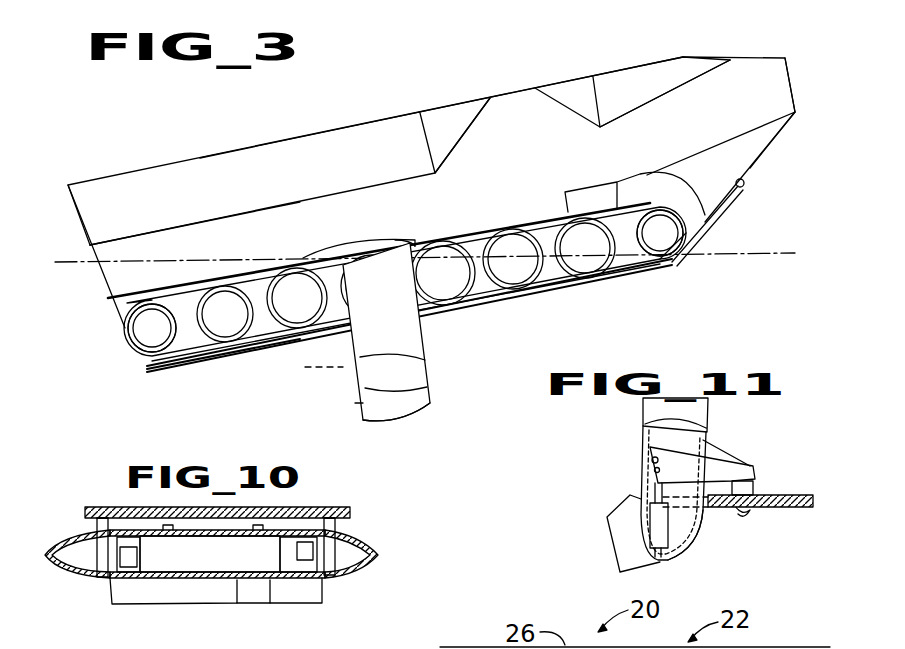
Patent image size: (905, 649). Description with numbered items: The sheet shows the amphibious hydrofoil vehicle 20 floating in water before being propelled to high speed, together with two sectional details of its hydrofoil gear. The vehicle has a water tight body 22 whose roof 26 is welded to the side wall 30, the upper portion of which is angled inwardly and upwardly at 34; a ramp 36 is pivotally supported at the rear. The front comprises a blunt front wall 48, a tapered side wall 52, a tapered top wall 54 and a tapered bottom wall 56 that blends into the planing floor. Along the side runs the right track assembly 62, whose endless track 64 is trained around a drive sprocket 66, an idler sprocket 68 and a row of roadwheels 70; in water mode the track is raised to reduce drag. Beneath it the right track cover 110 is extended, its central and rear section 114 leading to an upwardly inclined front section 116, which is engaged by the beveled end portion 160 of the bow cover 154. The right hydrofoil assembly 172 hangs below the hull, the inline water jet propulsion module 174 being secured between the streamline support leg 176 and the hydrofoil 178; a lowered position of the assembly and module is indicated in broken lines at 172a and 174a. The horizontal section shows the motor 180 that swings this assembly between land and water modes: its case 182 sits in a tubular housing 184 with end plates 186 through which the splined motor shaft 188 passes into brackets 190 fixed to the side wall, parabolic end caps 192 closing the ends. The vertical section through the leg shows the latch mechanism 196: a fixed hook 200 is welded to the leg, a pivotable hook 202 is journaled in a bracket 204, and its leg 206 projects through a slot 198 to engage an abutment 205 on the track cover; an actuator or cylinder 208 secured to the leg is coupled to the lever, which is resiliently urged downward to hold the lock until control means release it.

In FIG. 3, the amphibious hydrofoil vehicle 20 is at (408, 78).
In FIG. 3, the water tight body 22 is at (555, 80).
In FIG. 3, the roof 26 is at (296, 136).
In FIG. 3, the side wall 30 is at (522, 152).
In FIG. 10, the side wall 30 is at (325, 507).
In FIG. 3, the angled upper portion of side wall 34 is at (265, 186).
In FIG. 3, the ramp 36 is at (66, 187).
In FIG. 3, the blunt front wall 48 is at (794, 68).
In FIG. 3, the tapered side wall 52 is at (737, 112).
In FIG. 3, the tapered top wall 54 is at (727, 60).
In FIG. 3, the tapered bottom wall 56 is at (788, 125).
In FIG. 3, the right track assembly 62 is at (147, 365).
In FIG. 3, the endless track 64 is at (616, 182).
In FIG. 3, the drive sprocket 66 is at (700, 232).
In FIG. 3, the idler sprocket 68 is at (132, 334).
In FIG. 3, the roadwheels 70 is at (282, 270).
In FIG. 3, the right track cover 110 is at (545, 306).
In FIG. 11, the right track cover 110 is at (772, 496).
In FIG. 3, the central and rear section 114 is at (437, 310).
In FIG. 3, the front section 116 is at (636, 272).
In FIG. 3, the bow cover 154 is at (733, 207).
In FIG. 3, the beveled end portion 160 is at (680, 258).
In FIG. 3, the right hydrofoil assembly 172 is at (433, 362).
In FIG. 11, the right hydrofoil assembly 172 is at (640, 412).
In FIG. 3, the leg lowered position 172a is at (285, 372).
In FIG. 3, the inline water jet propulsion module 174 is at (412, 385).
In FIG. 3, the foot lowered position 174a is at (296, 403).
In FIG. 3, the streamline support leg 176 is at (405, 333).
In FIG. 10, the streamline support leg 176 is at (208, 603).
In FIG. 11, the streamline support leg 176 is at (645, 426).
In FIG. 3, the hydrofoil 178 is at (432, 396).
In FIG. 3, the motor 180 is at (376, 240).
In FIG. 10, the motor 180 is at (238, 560).
In FIG. 10, the case 182 is at (272, 603).
In FIG. 10, the tubular housing 184 is at (207, 584).
In FIG. 10, the end plates 186 is at (110, 584).
In FIG. 10, the motor shaft 188 is at (115, 582).
In FIG. 10, the brackets 190 is at (102, 514).
In FIG. 3, the parabolic end caps 192 is at (420, 239).
In FIG. 10, the parabolic end caps 192 is at (62, 546).
In FIG. 11, the latch mechanism 196 is at (745, 439).
In FIG. 11, the slot 198 is at (706, 445).
In FIG. 11, the fixed hook 200 is at (712, 522).
In FIG. 11, the pivotable hook 202 is at (654, 484).
In FIG. 11, the bracket 204 is at (648, 448).
In FIG. 11, the abutment 205 is at (744, 512).
In FIG. 11, the leg 206 is at (770, 462).
In FIG. 11, the actuator or cylinder 208 is at (655, 527).